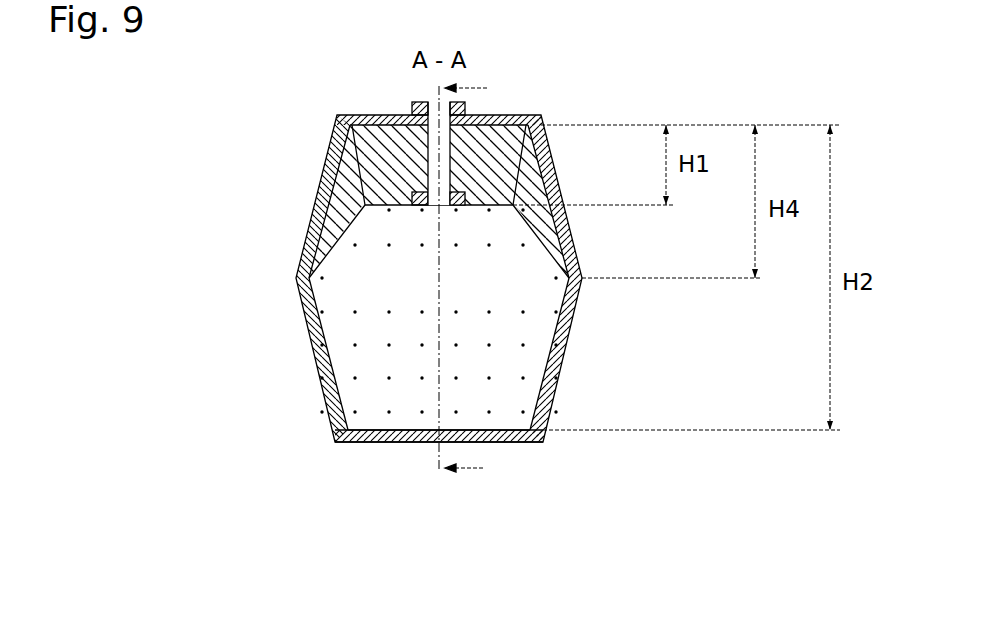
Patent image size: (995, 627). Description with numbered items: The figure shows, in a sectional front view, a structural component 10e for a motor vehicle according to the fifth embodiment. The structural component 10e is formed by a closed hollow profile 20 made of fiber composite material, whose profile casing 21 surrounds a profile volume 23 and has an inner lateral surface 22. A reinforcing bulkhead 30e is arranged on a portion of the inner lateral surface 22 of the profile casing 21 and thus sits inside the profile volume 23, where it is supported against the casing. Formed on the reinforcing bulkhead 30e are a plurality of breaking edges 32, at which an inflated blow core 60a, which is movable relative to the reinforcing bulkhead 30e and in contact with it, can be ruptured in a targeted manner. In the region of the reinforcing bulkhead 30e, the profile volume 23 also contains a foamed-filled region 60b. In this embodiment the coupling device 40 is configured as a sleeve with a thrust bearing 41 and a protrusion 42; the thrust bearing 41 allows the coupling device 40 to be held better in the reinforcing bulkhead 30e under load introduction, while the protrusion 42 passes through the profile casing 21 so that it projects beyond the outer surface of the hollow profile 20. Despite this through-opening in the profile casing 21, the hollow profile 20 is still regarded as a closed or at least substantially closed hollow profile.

The structural component 10e is at (244, 174).
The closed hollow profile 20 is at (347, 454).
The profile casing 21 is at (400, 442).
The inner lateral surface 22 is at (367, 427).
The profile volume 23 is at (347, 335).
The reinforcing bulkhead 30e is at (408, 207).
The breaking edge 32 is at (378, 207).
The coupling device 40 is at (443, 206).
The thrust bearing 41 is at (456, 207).
The protrusion 42 is at (412, 105).
The inflated blow core 60a is at (626, 360).
The foam-filled region 60b is at (557, 330).